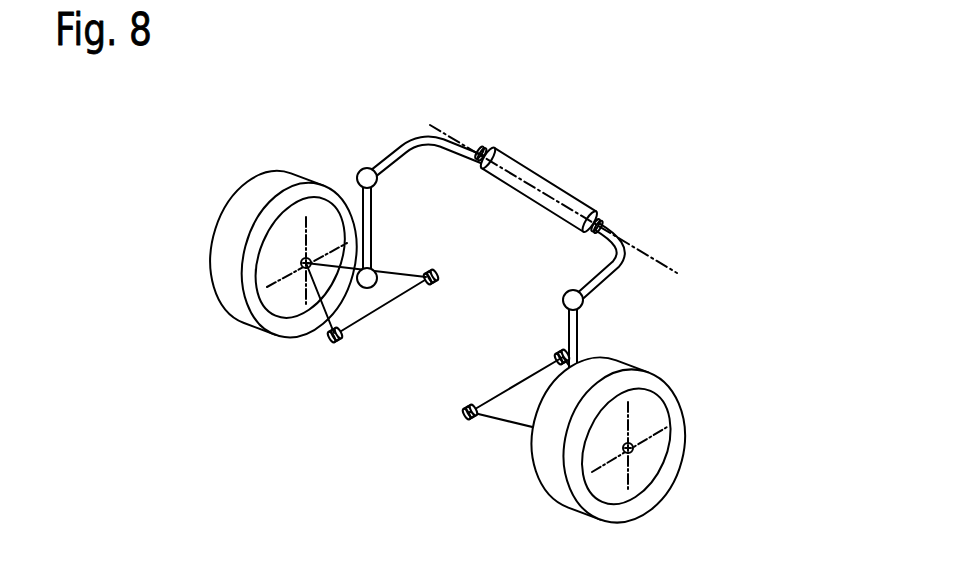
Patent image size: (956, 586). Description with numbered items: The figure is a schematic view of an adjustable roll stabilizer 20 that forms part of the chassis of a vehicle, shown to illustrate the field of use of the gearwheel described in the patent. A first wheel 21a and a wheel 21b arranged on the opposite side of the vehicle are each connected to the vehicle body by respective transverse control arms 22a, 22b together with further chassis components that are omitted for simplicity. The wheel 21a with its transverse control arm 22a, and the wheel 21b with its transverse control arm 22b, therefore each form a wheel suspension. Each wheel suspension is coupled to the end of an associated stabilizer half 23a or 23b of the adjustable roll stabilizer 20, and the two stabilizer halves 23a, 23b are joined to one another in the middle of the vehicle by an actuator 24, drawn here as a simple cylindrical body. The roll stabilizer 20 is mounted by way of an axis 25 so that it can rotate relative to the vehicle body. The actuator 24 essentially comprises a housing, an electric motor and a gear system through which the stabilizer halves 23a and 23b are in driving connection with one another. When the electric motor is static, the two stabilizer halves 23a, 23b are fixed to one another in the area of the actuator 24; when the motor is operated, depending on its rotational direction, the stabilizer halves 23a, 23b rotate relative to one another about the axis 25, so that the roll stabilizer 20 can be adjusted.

The adjustable roll stabilizer 20 is at (692, 116).
The first wheel 21a is at (228, 258).
The wheel 21b is at (677, 435).
The transverse control arm 22a is at (355, 305).
The transverse control arm 22b is at (513, 412).
The stabilizer half 23a is at (418, 142).
The stabilizer half 23b is at (608, 280).
The actuator 24 is at (550, 185).
The axis 25 is at (671, 268).